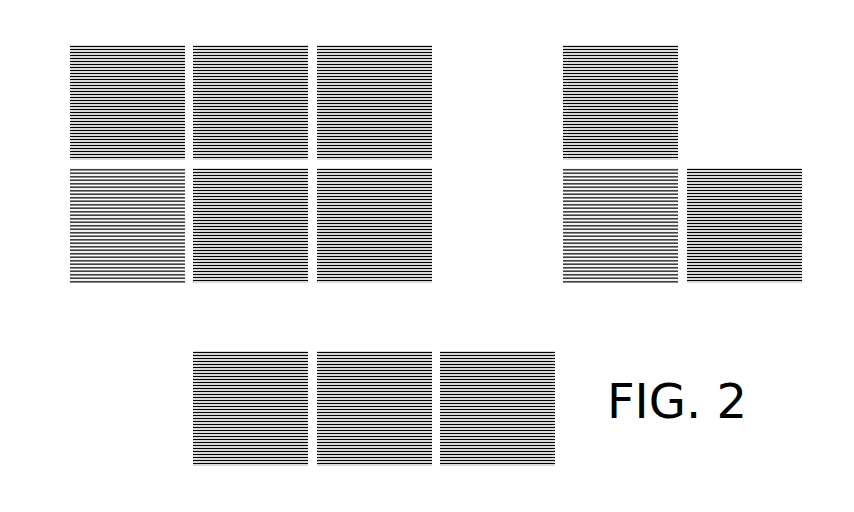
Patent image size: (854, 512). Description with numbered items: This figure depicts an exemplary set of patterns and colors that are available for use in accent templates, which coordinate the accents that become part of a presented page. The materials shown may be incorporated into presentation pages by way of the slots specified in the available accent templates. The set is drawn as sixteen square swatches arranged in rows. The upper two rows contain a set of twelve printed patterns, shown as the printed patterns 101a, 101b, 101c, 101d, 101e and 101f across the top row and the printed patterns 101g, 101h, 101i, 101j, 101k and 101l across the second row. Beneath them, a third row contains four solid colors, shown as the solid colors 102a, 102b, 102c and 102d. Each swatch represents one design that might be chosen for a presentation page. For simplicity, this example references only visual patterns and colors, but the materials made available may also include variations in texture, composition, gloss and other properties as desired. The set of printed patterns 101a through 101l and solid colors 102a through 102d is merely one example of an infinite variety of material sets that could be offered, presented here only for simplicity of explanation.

The printed pattern 101a is at (93, 52).
The printed pattern 101b is at (217, 52).
The printed pattern 101c is at (340, 52).
The printed pattern 101d is at (505, 52).
The printed pattern 101e is at (630, 50).
The printed pattern 101f is at (750, 55).
The printed pattern 101g is at (94, 278).
The printed pattern 101h is at (218, 280).
The printed pattern 101i is at (340, 280).
The printed pattern 101j is at (462, 280).
The printed pattern 101k is at (584, 280).
The printed pattern 101l is at (710, 281).
The solid color 102a is at (157, 362).
The solid color 102b is at (282, 362).
The solid color 102c is at (402, 362).
The solid color 102d is at (527, 362).